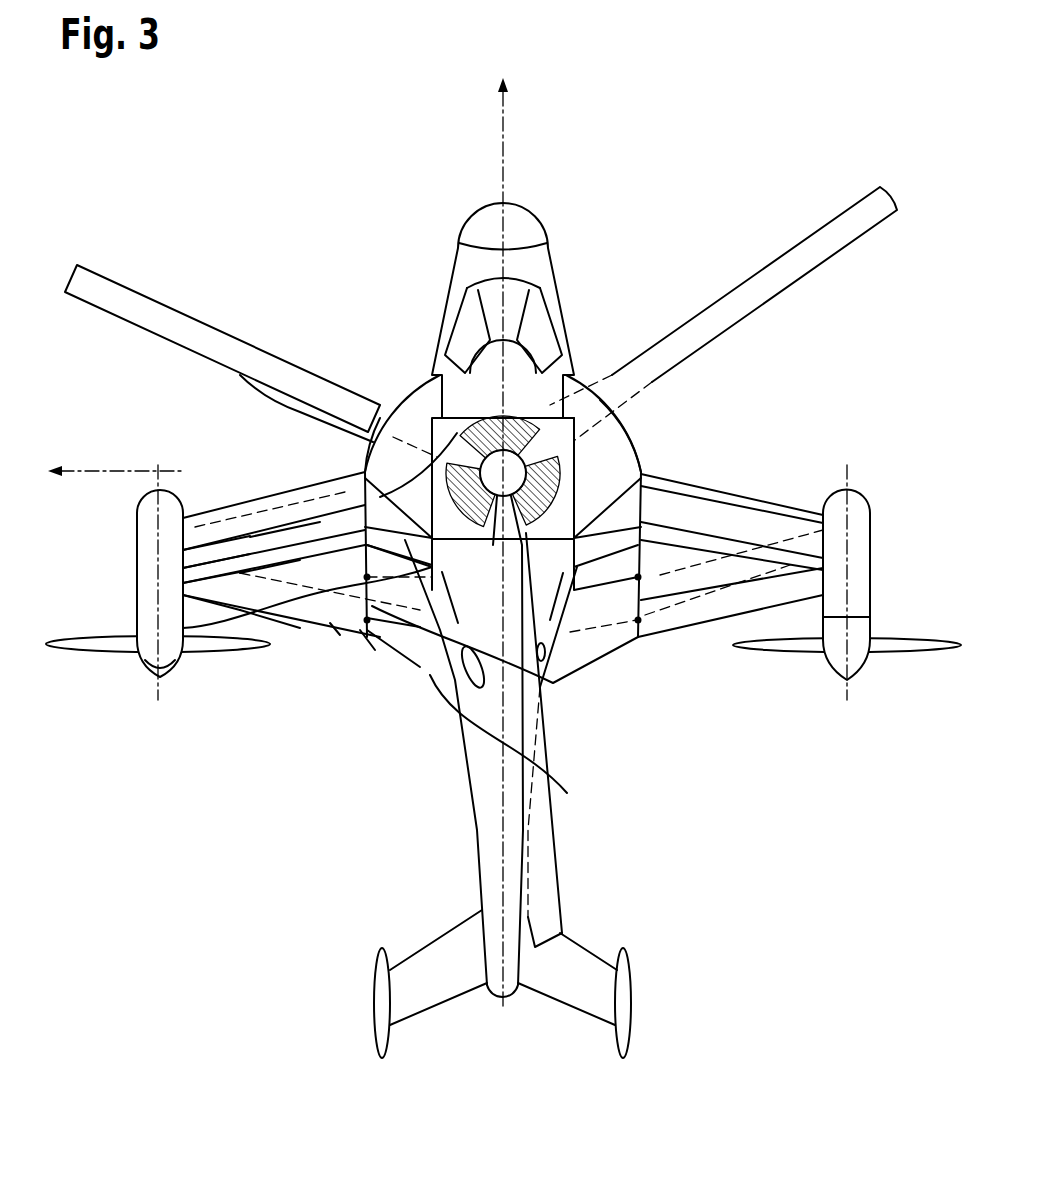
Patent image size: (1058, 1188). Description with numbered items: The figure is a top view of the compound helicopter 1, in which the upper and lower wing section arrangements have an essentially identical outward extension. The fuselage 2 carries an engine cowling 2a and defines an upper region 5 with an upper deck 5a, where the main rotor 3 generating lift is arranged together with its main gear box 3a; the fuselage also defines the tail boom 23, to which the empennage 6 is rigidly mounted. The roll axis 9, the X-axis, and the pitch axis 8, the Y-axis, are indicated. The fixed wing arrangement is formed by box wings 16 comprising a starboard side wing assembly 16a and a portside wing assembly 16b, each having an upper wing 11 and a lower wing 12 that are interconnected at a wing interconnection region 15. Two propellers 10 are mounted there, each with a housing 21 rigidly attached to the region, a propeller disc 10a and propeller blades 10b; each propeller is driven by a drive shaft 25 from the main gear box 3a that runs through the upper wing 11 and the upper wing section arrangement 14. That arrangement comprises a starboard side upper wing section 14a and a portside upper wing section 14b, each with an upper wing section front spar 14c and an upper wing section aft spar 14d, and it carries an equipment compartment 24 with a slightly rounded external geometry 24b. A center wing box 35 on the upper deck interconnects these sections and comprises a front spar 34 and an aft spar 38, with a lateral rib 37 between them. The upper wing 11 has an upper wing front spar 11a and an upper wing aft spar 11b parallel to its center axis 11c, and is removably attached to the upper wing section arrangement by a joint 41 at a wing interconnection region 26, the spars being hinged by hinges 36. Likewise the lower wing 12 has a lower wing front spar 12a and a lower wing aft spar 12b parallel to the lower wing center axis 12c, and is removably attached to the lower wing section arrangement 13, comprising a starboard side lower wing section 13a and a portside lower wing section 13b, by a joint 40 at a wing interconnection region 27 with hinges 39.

The compound helicopter 1 is at (182, 205).
The fuselage 2 is at (553, 278).
The engine cowling 2a is at (566, 624).
The main rotor 3 is at (822, 213).
The main gear box 3a is at (580, 468).
The upper region 5 is at (502, 356).
The upper deck 5a is at (436, 368).
The empennage 6 is at (642, 1003).
The pitch axis 8 is at (74, 462).
The roll axis 9 is at (516, 124).
The propeller 10 is at (116, 684).
The propeller disc 10a is at (190, 657).
The propeller blade 10b is at (94, 654).
The upper wing 11 is at (194, 510).
The upper wing front spar 11a is at (206, 526).
The upper wing aft spar 11b is at (205, 548).
The center axis 11c is at (279, 517).
The lower wing 12 is at (183, 628).
The lower wing front spar 12a is at (236, 630).
The lower wing aft spar 12b is at (205, 592).
The lower wing center axis 12c is at (313, 606).
The lower wing section arrangement 13 is at (420, 660).
The starboard side lower wing section 13a is at (553, 685).
The portside lower wing section 13b is at (636, 656).
The upper wing section arrangement 14 is at (420, 374).
The starboard side upper wing section 14a is at (372, 404).
The portside upper wing section 14b is at (617, 428).
The upper wing section front spar 14c is at (402, 406).
The upper wing section aft spar 14d is at (548, 692).
The wing interconnection region 15 is at (134, 506).
The box wings 16 is at (762, 480).
The starboard side wing assembly 16a is at (708, 632).
The portside wing assembly 16b is at (278, 634).
The housing 21 is at (153, 678).
The tail boom 23 is at (474, 832).
The equipment compartment 24 is at (240, 373).
The slightly rounded external geometry 24b is at (362, 434).
The drive shaft 25 is at (246, 540).
The wing interconnection region 26 is at (340, 640).
The wing interconnection region 27 is at (367, 642).
The front spar 34 is at (520, 414).
The center wing box 35 is at (541, 412).
The hinges 36 is at (349, 498).
The lateral rib 37 is at (565, 500).
The aft spar 38 is at (641, 622).
The hinges 39 is at (356, 635).
The joint 40 is at (376, 602).
The joint 41 is at (445, 443).